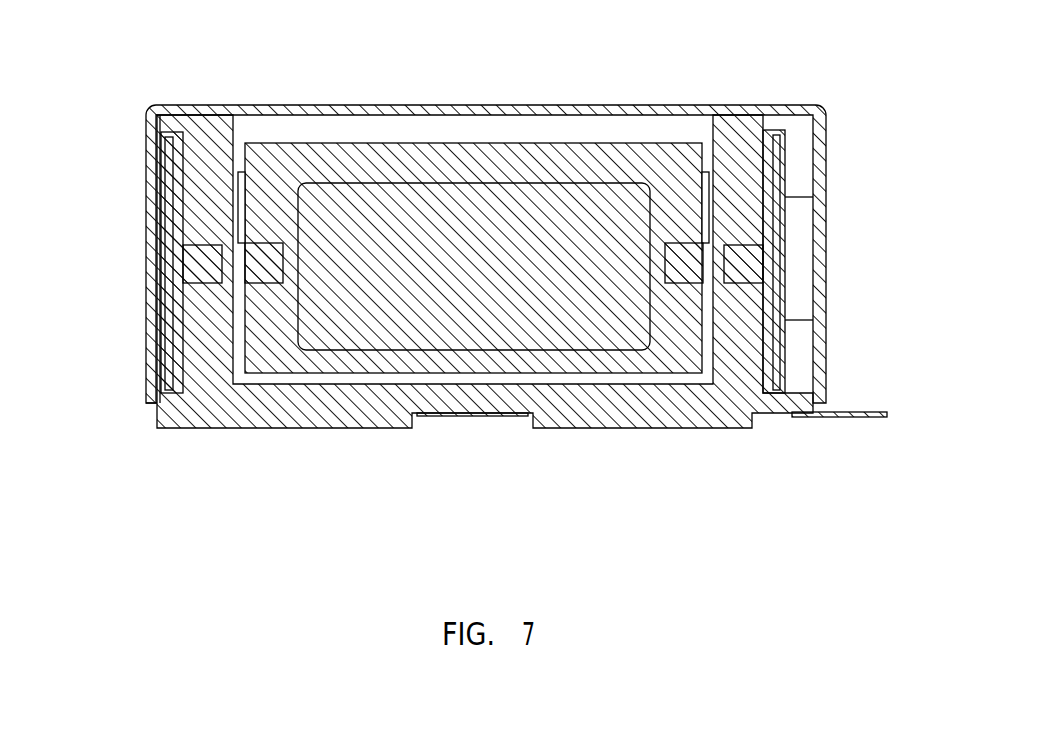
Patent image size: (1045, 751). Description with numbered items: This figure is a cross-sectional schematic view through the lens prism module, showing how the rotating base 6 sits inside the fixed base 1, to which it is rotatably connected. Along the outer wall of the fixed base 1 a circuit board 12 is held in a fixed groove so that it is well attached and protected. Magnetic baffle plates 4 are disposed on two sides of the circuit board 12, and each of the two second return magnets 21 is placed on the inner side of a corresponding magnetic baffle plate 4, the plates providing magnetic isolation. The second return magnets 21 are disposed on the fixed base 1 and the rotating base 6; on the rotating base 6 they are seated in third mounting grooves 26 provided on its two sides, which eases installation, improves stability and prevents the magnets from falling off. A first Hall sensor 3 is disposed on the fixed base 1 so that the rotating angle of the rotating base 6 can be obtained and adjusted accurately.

The fixed base 1 is at (260, 405).
The circuit board 12 is at (158, 218).
The rotating base 6 is at (668, 172).
The second return magnets 21 is at (258, 250).
The third mounting grooves 26 is at (265, 285).
The magnetic baffle plates 4 is at (180, 296).
The first Hall sensor 3 is at (748, 265).